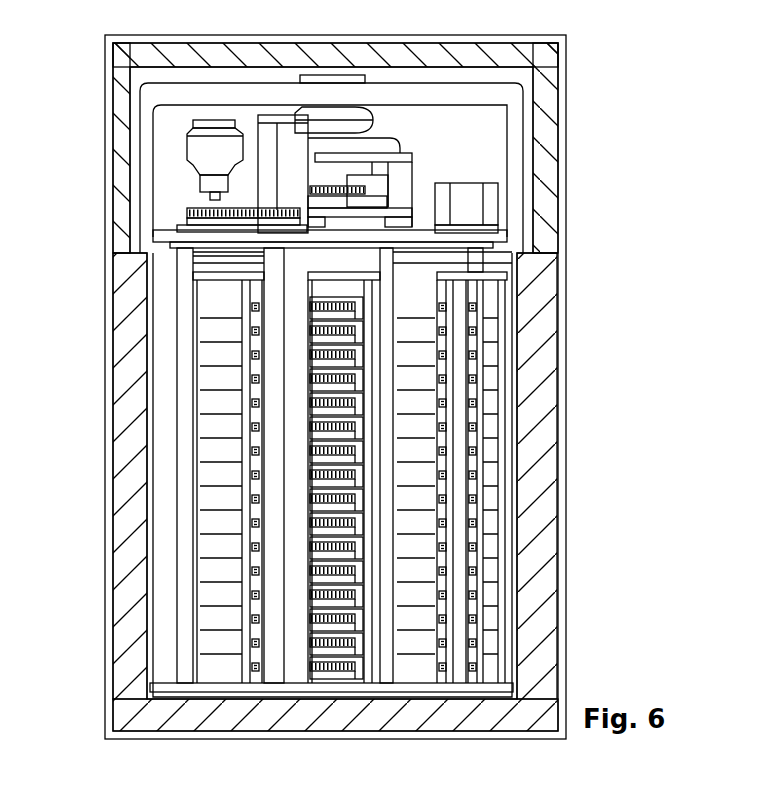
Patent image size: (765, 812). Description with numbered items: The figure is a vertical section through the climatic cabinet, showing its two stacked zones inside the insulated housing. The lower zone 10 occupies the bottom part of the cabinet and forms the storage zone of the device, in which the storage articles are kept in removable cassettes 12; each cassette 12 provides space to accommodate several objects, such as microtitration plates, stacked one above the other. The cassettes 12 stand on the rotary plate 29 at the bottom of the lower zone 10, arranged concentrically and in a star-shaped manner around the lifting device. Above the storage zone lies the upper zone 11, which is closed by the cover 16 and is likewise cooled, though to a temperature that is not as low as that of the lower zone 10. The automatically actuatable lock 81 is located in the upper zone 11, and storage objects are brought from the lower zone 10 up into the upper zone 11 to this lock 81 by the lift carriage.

The lower zone 10 is at (95, 464).
The upper zone 11 is at (88, 208).
The removable cassette 12 is at (207, 463).
The cover 16 is at (120, 97).
The rotary plate 29 is at (465, 685).
The automatically actuatable lock 81 is at (387, 138).